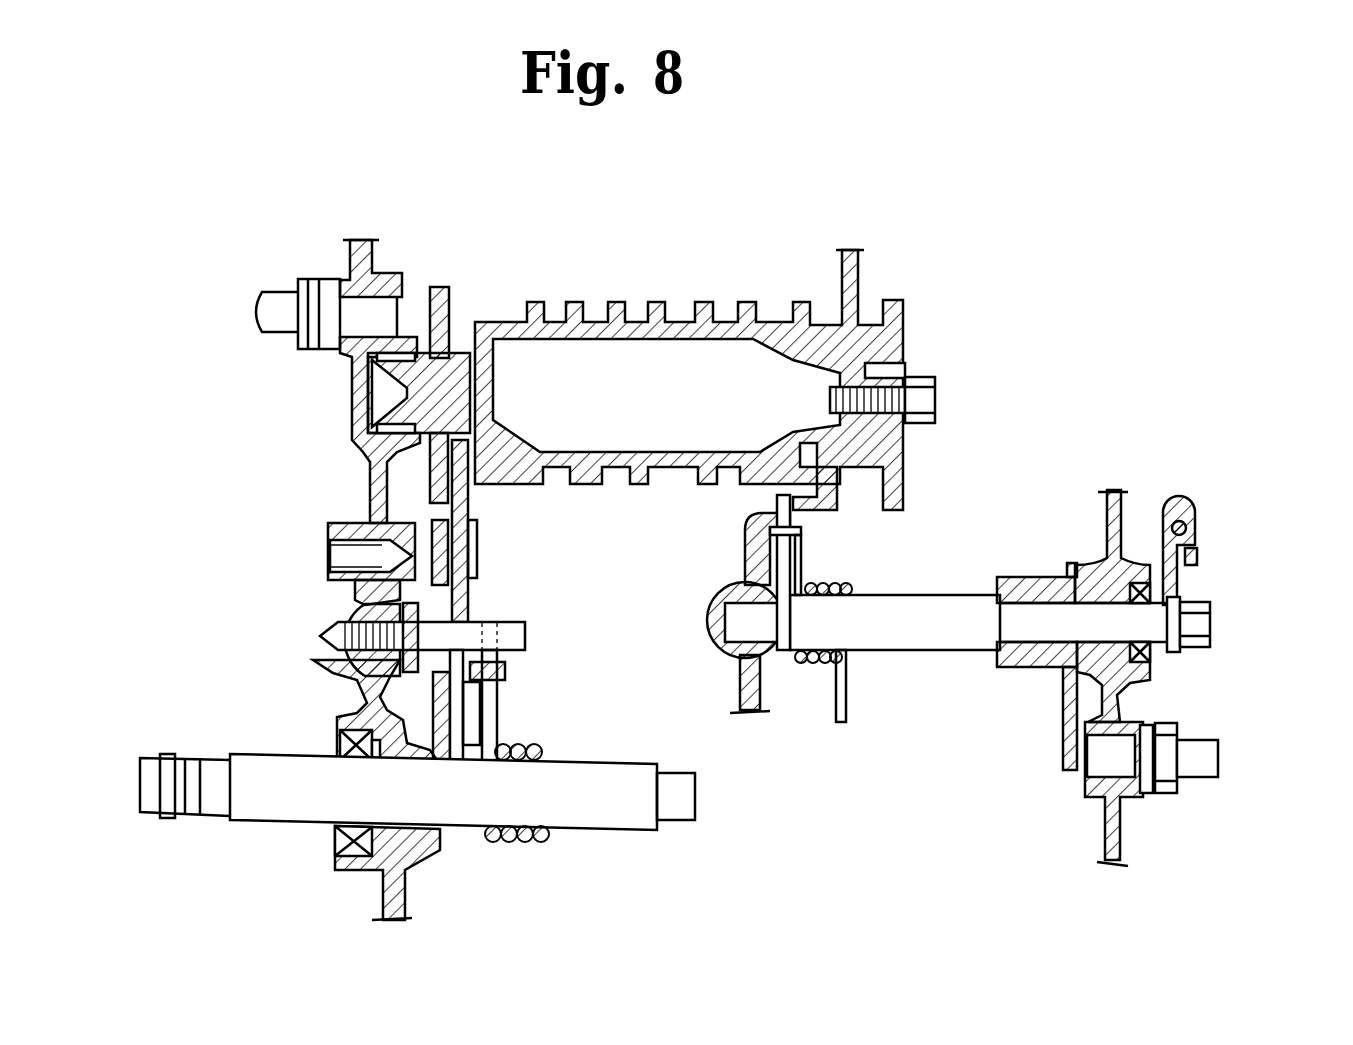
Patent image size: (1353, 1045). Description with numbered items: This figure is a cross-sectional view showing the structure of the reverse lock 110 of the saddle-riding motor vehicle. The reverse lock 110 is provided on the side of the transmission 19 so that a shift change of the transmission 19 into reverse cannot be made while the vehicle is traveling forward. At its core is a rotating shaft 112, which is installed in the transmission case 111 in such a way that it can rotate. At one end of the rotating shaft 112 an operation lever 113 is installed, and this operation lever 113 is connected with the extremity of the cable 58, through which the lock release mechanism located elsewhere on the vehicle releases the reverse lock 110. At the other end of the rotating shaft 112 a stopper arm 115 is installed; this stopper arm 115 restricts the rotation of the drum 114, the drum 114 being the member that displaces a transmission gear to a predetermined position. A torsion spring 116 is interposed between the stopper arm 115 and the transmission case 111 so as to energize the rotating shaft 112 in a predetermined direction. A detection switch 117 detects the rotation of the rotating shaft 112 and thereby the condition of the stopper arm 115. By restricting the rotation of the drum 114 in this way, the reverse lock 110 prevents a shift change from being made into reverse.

The transmission 19 is at (327, 220).
The drum 114 is at (675, 320).
The reverse lock 110 is at (998, 497).
The transmission case 111 is at (1115, 488).
The cable 58 is at (1195, 505).
The operation lever 113 is at (1215, 548).
The rotating shaft 112 is at (908, 592).
The stopper arm 115 is at (735, 652).
The torsion spring 116 is at (805, 658).
The detection switch 117 is at (1105, 760).